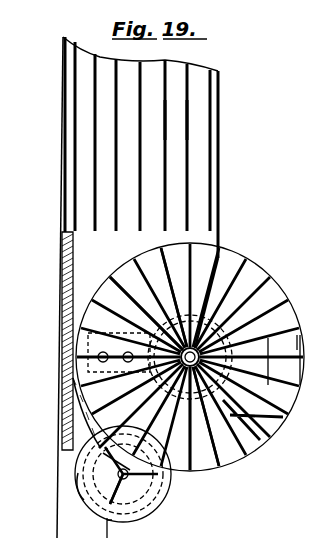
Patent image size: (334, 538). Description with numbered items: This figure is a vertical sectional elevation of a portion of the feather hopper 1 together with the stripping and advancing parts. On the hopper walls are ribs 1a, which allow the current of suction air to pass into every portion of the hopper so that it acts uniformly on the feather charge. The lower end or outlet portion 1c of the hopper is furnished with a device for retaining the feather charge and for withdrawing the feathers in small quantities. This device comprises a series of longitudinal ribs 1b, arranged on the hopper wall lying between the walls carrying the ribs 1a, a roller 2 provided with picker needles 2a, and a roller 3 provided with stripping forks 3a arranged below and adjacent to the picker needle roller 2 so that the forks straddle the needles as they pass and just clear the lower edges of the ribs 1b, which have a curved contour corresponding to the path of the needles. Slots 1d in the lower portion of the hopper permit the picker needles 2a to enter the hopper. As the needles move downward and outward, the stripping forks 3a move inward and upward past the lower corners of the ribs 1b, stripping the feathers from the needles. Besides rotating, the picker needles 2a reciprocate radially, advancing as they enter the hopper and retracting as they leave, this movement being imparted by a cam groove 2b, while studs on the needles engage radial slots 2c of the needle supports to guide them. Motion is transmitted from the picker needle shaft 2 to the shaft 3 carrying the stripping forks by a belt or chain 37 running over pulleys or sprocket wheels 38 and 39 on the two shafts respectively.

The hopper 1 is at (220, 187).
The ribs 1a is at (165, 137).
The longitudinal ribs 1b is at (88, 392).
The lower end or outlet portion of the hopper 1c is at (97, 388).
The slots 1d is at (187, 287).
The picker needle roller 2 is at (228, 452).
The picker needles 2a is at (106, 293).
The cam groove 2b is at (297, 383).
The radial slots 2c is at (285, 423).
The stripping fork roller 3 is at (137, 477).
The stripping forks 3a is at (103, 453).
The belt or chain 37 is at (200, 457).
The pulley or sprocket wheel 38 is at (235, 263).
The pulley or sprocket wheel 39 is at (132, 495).